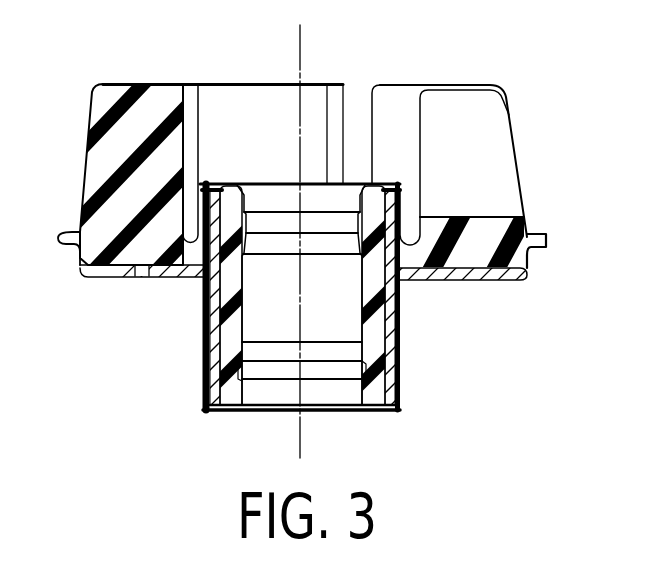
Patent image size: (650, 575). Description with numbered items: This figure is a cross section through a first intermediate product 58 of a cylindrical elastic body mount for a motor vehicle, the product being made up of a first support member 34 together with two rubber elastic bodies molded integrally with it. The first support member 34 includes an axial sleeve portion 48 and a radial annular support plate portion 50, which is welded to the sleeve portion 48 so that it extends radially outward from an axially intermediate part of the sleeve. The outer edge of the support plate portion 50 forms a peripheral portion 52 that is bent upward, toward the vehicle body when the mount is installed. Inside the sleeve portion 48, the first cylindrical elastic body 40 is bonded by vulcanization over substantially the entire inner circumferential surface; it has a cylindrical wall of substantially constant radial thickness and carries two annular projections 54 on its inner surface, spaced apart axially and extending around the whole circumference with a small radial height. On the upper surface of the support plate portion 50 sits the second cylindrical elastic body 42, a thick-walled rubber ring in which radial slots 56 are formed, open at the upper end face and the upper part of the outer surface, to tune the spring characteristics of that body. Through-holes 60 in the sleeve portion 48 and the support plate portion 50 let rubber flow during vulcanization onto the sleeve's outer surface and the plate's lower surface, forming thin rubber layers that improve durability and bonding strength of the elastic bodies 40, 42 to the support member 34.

The first support member 34 is at (204, 381).
The first cylindrical elastic body 40 is at (222, 298).
The second cylindrical elastic body 42 is at (100, 149).
The sleeve portion 48 is at (397, 377).
The annular support plate portion 50 is at (488, 283).
The peripheral portion 52 is at (70, 248).
The annular projections 54 is at (270, 218).
The radial slots 56 is at (197, 137).
The first intermediate product 58 is at (463, 70).
The through-holes 60 is at (145, 270).